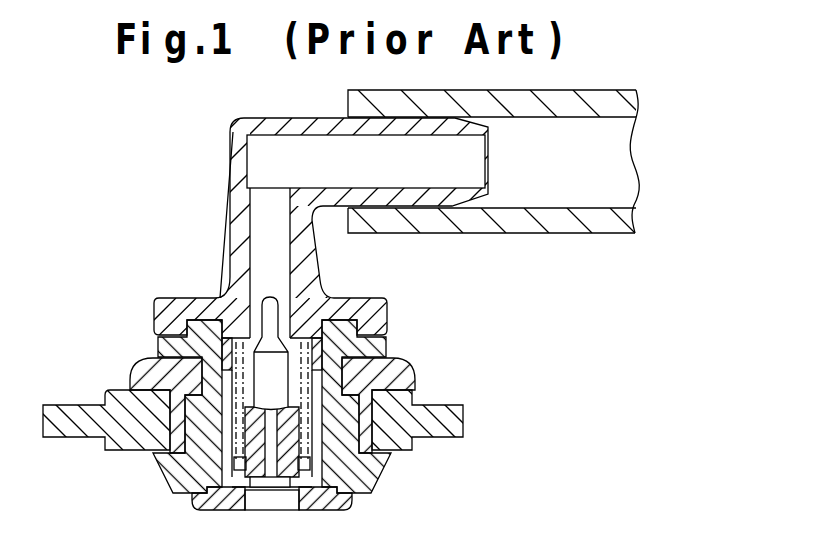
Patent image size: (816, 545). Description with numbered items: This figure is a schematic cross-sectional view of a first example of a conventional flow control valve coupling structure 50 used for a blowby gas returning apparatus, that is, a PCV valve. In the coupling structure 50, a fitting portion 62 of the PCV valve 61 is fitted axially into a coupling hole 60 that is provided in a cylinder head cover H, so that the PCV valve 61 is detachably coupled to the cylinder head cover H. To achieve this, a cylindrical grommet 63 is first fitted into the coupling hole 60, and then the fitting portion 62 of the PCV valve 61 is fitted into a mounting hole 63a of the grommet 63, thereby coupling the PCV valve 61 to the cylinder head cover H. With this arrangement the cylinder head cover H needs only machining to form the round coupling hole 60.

The flow control valve coupling structure 50 is at (434, 350).
The PCV valve 61 is at (153, 293).
The coupling hole 60 is at (381, 462).
The fitting portion 62 is at (202, 490).
The grommet 63 is at (153, 471).
The mounting hole 63a is at (342, 483).
The cylinder head cover H is at (63, 403).